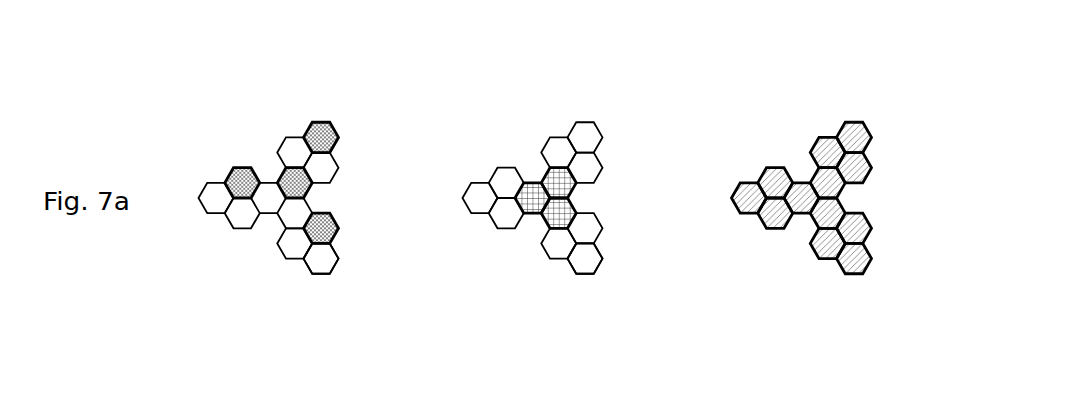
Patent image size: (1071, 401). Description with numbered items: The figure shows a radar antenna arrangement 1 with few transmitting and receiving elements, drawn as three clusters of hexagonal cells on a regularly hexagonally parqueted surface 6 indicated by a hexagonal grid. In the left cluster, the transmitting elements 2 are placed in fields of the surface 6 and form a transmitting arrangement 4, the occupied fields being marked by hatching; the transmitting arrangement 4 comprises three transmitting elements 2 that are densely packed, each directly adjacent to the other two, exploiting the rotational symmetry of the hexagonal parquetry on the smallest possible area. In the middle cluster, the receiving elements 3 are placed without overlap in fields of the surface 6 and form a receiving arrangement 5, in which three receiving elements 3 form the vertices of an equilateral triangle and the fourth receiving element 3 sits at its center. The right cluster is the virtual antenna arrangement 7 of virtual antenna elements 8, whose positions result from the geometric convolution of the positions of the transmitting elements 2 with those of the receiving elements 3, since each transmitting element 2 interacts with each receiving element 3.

The radar antenna arrangement 1 is at (380, 87).
The transmitting element 2 is at (565, 185).
The receiving element 3 is at (333, 152).
The transmitting arrangement 4 is at (612, 113).
The receiving arrangement 5 is at (245, 120).
The regularly hexagonally parqueted surface 6 is at (340, 290).
The virtual antenna arrangement 7 is at (873, 113).
The virtual antenna element 8 is at (866, 148).